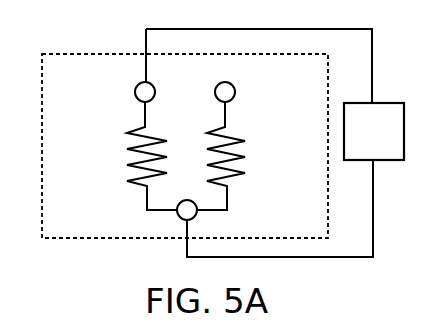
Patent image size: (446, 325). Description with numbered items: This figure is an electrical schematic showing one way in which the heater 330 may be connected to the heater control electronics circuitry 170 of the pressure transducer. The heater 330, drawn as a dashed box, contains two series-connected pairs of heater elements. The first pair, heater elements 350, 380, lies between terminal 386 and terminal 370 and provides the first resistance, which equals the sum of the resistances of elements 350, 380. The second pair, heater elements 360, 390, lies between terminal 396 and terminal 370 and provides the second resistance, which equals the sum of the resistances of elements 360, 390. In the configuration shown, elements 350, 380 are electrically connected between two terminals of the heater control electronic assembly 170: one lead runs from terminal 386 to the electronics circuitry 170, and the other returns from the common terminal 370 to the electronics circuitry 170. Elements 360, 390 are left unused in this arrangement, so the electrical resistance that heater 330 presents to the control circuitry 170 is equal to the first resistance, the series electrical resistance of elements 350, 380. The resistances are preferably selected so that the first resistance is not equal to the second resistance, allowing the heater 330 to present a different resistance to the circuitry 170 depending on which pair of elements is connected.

The heater control electronics circuitry 170 is at (392, 142).
The heater 330 is at (108, 240).
The heater element 350 is at (115, 156).
The heater element 360 is at (254, 167).
The terminal 370 is at (176, 214).
The heater element 380 is at (109, 181).
The terminal 386 is at (134, 92).
The heater element 390 is at (243, 195).
The terminal 396 is at (236, 93).